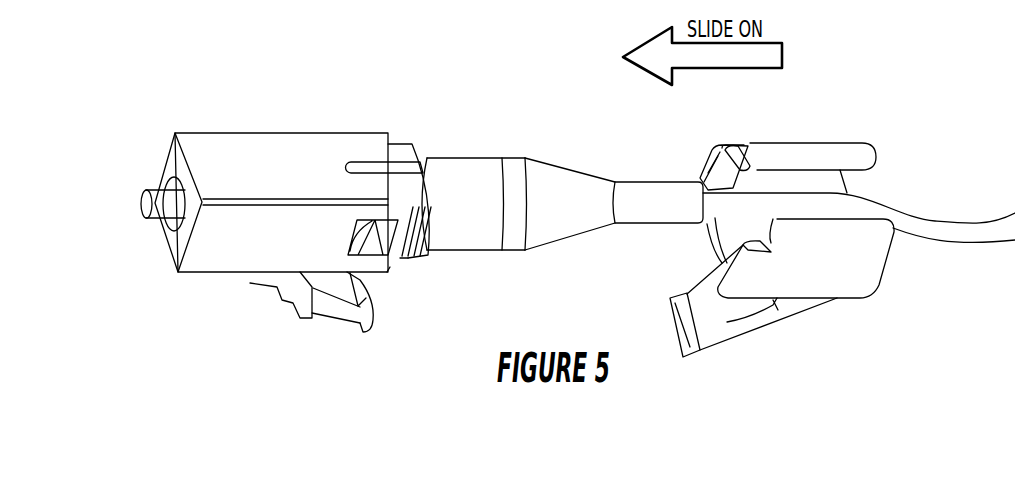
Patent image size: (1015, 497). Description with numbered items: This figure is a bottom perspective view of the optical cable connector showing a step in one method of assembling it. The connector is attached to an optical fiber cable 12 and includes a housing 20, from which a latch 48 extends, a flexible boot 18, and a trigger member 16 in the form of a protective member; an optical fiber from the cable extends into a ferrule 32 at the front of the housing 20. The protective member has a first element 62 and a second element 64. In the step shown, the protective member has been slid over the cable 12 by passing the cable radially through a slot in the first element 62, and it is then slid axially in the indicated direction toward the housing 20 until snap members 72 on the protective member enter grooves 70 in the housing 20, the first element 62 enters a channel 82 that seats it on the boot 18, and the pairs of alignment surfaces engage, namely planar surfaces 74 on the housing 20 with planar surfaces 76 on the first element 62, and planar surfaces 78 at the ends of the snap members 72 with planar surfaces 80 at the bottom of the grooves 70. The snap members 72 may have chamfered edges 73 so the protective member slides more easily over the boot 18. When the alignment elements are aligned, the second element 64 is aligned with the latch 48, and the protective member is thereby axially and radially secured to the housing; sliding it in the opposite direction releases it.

The optical fiber cable 12 is at (937, 220).
The trigger member 16 is at (858, 273).
The flexible boot 18 is at (562, 225).
The housing 20 is at (226, 141).
The ferrule 32 is at (156, 197).
The latch 48 is at (345, 310).
The first element 62 is at (880, 247).
The second element 64 is at (728, 338).
The grooves 70 is at (418, 262).
The snap members 72 is at (722, 148).
The chamfered edges 73 is at (701, 178).
The planar surfaces 74 is at (433, 250).
The planar surfaces 76 is at (740, 160).
The planar surfaces 78 is at (705, 177).
The planar surfaces 80 is at (433, 195).
The channel 82 is at (480, 165).